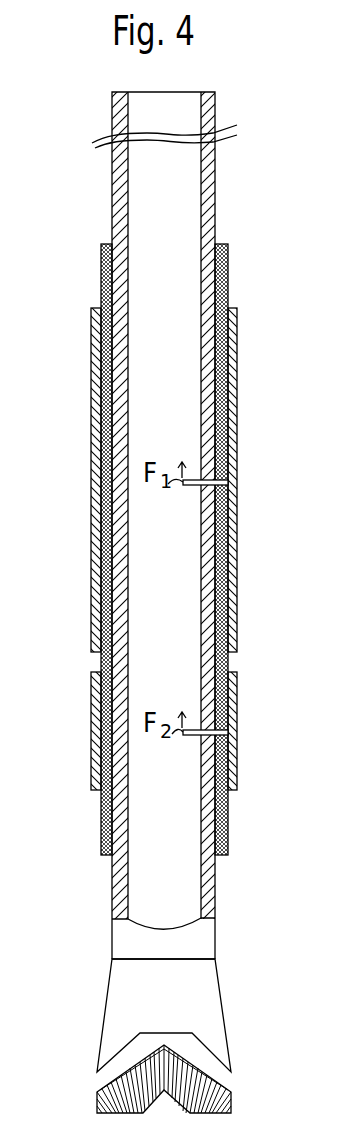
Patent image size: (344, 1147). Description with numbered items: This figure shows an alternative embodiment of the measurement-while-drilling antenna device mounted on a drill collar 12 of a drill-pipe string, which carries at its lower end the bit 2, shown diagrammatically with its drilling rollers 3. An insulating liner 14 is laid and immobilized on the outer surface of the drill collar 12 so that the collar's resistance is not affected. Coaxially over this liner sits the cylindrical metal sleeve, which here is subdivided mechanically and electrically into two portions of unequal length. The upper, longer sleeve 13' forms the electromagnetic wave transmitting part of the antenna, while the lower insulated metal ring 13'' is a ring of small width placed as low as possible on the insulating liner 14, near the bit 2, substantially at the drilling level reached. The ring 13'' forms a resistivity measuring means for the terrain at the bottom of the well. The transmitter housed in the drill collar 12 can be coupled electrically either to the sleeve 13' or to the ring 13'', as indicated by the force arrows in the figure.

The drill collar 12 is at (119, 192).
The cylindrical metal sleeve portion 13' is at (167, 480).
The lower insulated metal ring 13'' is at (170, 731).
The insulating liner 14 is at (108, 567).
The bit 2 is at (213, 1030).
The drilling rollers 3 is at (107, 1095).